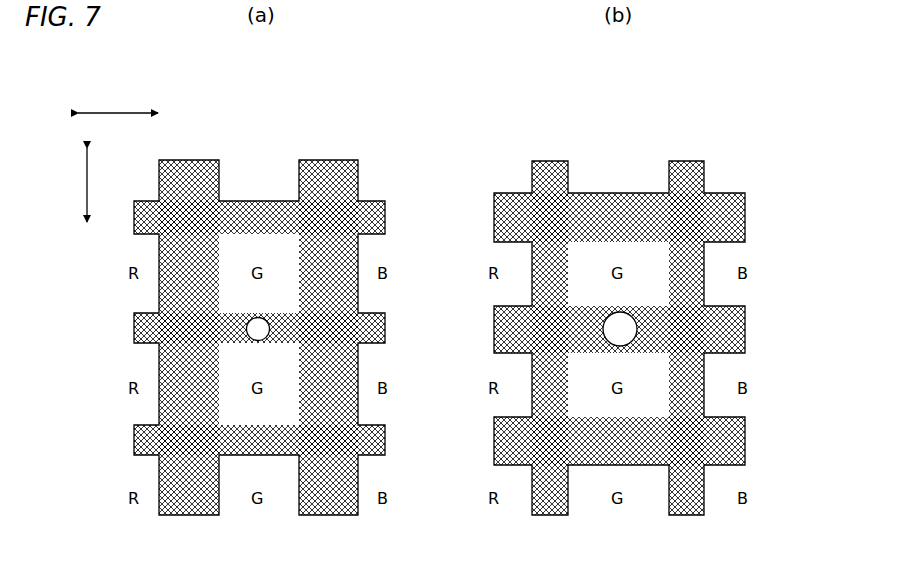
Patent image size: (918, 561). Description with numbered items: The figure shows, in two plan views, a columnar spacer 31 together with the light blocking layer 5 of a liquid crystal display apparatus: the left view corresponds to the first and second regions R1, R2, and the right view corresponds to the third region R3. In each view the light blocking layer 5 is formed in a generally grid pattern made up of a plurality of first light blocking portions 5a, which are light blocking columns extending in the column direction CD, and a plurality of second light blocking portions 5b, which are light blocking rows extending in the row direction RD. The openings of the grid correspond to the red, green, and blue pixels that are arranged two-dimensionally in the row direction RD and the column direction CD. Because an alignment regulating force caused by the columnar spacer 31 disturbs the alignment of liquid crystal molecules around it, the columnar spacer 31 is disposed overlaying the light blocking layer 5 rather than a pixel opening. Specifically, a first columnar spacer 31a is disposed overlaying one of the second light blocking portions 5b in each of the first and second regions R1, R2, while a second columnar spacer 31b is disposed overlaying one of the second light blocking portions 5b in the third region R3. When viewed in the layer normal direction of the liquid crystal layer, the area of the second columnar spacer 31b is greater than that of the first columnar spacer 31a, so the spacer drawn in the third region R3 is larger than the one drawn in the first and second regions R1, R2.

The light blocking layer 5 is at (438, 292).
The first light blocking portions 5a is at (190, 160).
The second light blocking portions 5b is at (255, 201).
The columnar spacer 31 is at (439, 325).
The first columnar spacer 31a is at (246, 328).
The second columnar spacer 31b is at (637, 328).
The first region R1 is at (402, 148).
The second region R2 is at (400, 150).
The third region R3 is at (764, 148).
The row direction RD is at (118, 101).
The column direction CD is at (72, 185).